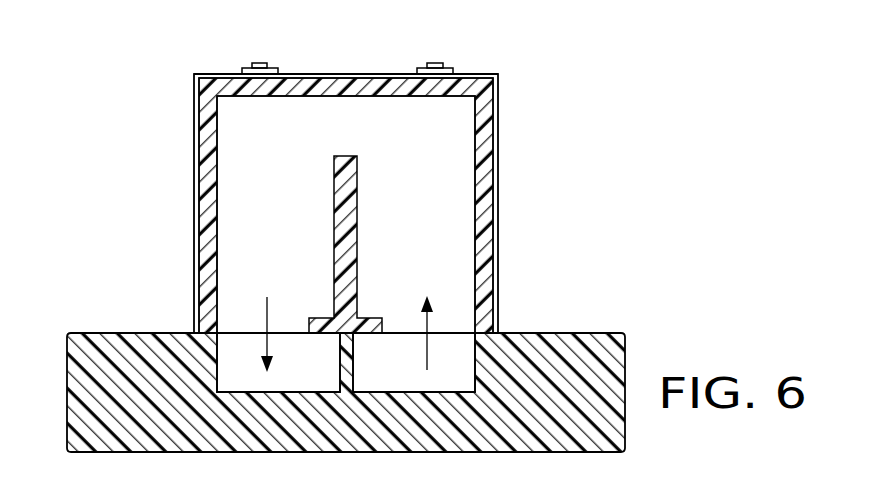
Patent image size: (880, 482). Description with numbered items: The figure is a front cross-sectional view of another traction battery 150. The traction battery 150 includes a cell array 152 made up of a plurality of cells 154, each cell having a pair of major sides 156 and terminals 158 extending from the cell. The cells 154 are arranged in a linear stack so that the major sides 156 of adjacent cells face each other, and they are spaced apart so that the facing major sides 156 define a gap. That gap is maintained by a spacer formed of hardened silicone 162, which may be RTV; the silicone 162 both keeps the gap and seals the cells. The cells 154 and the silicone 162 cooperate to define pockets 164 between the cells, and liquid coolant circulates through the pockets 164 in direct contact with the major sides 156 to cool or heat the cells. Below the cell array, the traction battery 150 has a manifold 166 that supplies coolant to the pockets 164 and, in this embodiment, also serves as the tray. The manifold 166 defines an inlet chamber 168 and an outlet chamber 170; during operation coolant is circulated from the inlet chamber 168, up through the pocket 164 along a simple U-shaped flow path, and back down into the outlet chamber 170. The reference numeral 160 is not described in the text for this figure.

The traction battery 150 is at (158, 96).
The cell array 152 is at (498, 175).
The cells 154 is at (350, 73).
The major sides 156 is at (298, 173).
The terminals 158 is at (254, 62).
The outer casing 160 is at (498, 107).
The silicone 162 is at (202, 203).
The pockets 164 is at (452, 245).
The manifold 166 is at (597, 333).
The inlet chamber 168 is at (407, 372).
The outlet chamber 170 is at (322, 372).